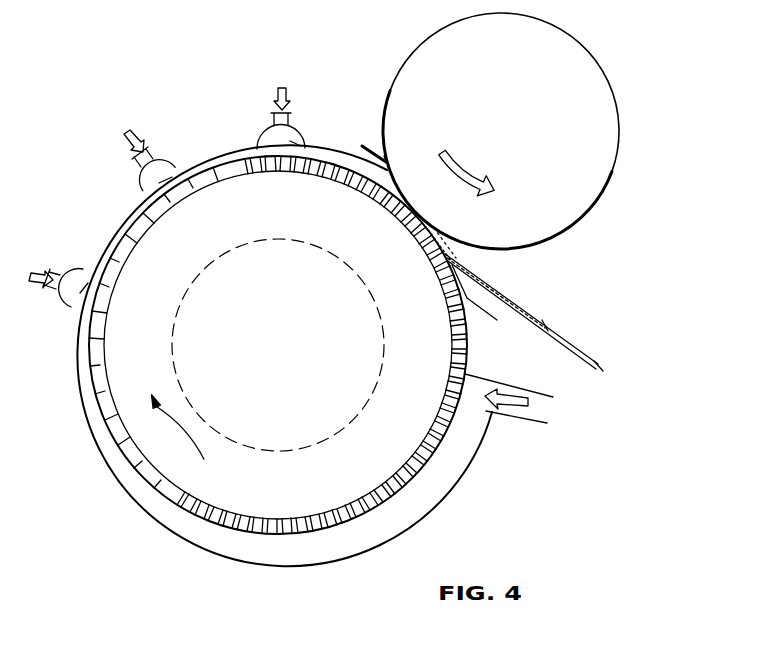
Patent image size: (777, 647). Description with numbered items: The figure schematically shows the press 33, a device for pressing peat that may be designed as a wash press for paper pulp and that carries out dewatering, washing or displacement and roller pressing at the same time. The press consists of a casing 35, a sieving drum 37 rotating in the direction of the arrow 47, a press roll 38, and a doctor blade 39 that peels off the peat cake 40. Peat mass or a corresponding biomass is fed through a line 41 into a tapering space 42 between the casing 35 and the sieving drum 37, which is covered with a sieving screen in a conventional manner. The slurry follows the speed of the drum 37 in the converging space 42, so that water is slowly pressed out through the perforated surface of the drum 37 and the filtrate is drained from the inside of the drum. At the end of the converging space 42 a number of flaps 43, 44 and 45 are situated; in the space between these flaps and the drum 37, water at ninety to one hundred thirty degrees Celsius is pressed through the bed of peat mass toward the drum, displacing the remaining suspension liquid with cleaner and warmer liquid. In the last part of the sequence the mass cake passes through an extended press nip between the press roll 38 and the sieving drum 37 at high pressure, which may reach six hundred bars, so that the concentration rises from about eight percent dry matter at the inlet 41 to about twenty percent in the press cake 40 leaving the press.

The press 33 is at (243, 97).
The casing 35 is at (97, 450).
The sieving drum 37 is at (160, 483).
The press roll 38 is at (399, 72).
The doctor blade 39 is at (490, 306).
The peat cake 40 is at (517, 302).
The line 41 is at (527, 413).
The tapering space 42 is at (436, 484).
The flap 43 is at (123, 218).
The flap 44 is at (199, 157).
The flap 45 is at (318, 147).
The arrow 47 is at (190, 447).